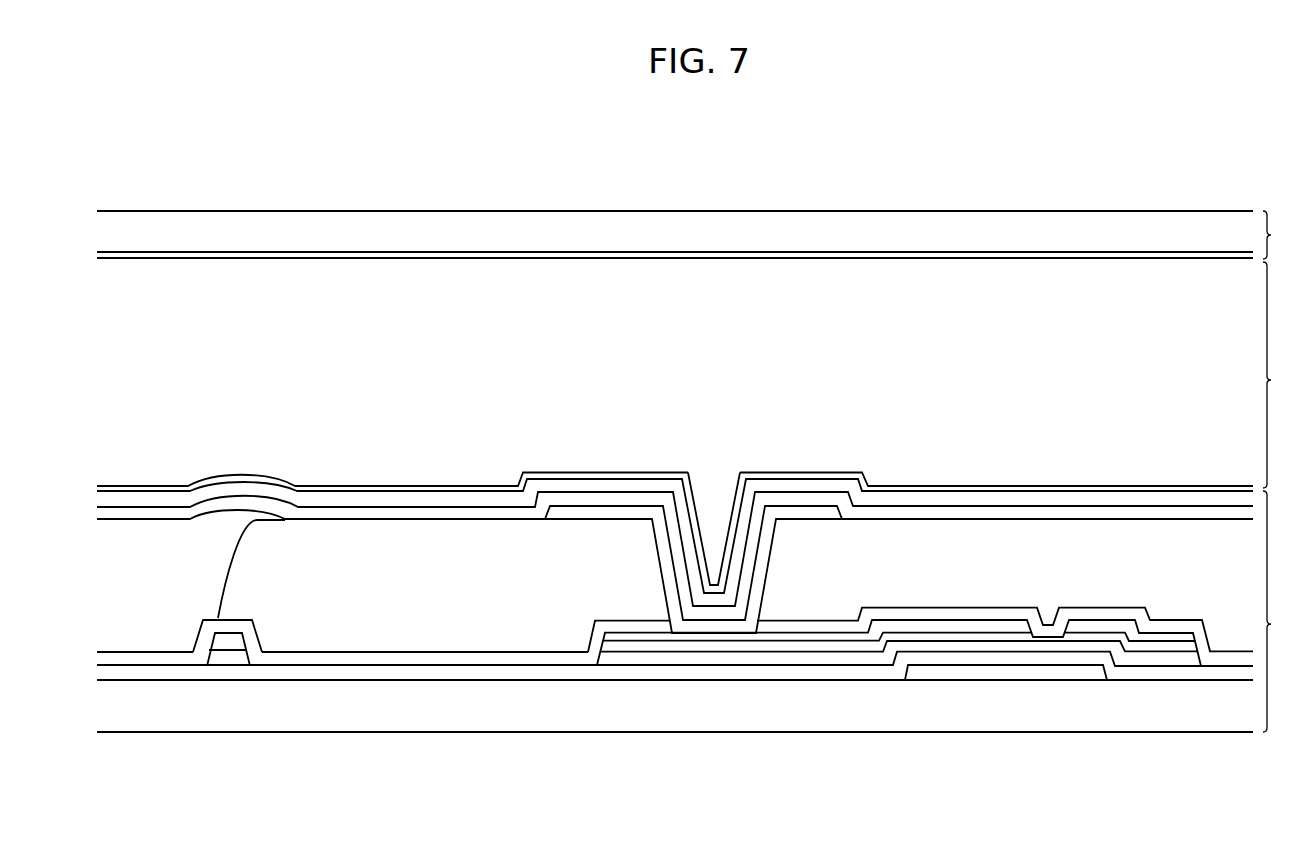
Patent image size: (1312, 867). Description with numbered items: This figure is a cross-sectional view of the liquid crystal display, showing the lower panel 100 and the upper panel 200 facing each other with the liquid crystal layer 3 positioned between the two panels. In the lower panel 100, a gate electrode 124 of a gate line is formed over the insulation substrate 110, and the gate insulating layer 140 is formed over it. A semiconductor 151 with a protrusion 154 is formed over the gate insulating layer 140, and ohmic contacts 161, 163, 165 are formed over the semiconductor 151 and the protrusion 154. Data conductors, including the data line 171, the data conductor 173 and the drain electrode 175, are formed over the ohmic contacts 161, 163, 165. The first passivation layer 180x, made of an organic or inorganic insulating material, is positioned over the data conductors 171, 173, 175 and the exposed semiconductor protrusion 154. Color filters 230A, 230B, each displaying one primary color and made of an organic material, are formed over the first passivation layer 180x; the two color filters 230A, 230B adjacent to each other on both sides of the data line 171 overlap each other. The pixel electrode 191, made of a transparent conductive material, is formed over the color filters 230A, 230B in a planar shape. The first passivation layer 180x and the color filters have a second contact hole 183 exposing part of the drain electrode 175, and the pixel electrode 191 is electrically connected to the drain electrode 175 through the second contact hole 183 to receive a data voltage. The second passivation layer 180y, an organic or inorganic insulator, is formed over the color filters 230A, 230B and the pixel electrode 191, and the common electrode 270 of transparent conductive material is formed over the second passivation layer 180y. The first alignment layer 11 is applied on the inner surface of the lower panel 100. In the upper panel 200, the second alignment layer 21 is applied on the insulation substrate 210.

The upper panel 200 is at (1286, 235).
The insulation substrate 210 is at (473, 232).
The second alignment layer 21 is at (640, 258).
The liquid crystal layer 3 is at (1275, 375).
The lower panel 100 is at (1286, 611).
The insulation substrate 110 is at (613, 700).
The gate electrode 124 is at (1050, 672).
The gate insulating layer 140 is at (716, 675).
The protrusion 154 is at (990, 648).
The ohmic contact 163 is at (1147, 653).
The ohmic contact 165 is at (853, 652).
The data conductor 173 is at (1170, 640).
The drain electrode 175 is at (932, 625).
The first passivation layer 180x is at (1224, 660).
The second passivation layer 180y is at (440, 512).
The second contact hole 183 is at (765, 562).
The pixel electrode 191 is at (822, 512).
The common electrode 270 is at (334, 500).
The first alignment layer 11 is at (1047, 505).
The color filter 230A is at (133, 613).
The color filter 230B is at (470, 618).
The semiconductor 151 is at (243, 662).
The ohmic contact 161 is at (230, 652).
The data line 171 is at (218, 640).